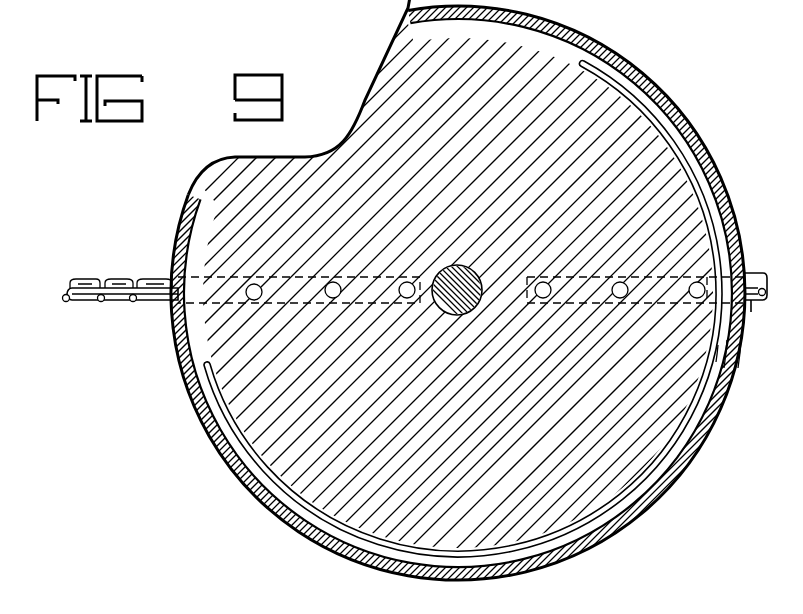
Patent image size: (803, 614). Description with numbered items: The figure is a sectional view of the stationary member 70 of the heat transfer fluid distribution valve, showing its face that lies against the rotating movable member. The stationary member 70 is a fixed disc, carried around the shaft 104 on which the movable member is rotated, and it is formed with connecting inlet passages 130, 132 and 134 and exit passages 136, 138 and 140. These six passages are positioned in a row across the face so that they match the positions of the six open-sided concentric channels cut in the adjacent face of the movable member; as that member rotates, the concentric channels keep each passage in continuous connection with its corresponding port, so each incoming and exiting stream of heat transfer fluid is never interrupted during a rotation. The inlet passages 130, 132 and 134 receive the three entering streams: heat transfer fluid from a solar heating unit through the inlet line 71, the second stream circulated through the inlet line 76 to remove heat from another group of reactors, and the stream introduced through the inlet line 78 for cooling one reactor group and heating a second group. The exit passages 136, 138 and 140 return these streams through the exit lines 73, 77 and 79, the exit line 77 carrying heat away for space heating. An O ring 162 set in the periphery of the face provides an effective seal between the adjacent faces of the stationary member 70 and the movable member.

The stationary member 70 is at (224, 461).
The O ring 162 is at (651, 98).
The shaft 104 is at (463, 314).
The inlet passage 130 is at (333, 282).
The inlet passage 132 is at (255, 300).
The inlet passage 134 is at (406, 298).
The exit passage 136 is at (620, 298).
The exit passage 138 is at (697, 282).
The exit passage 140 is at (543, 282).
The inlet line 71 is at (160, 302).
The inlet line 76 is at (113, 302).
The inlet line 78 is at (68, 302).
The exit line 73 is at (740, 353).
The exit line 77 is at (686, 357).
The exit line 79 is at (681, 371).